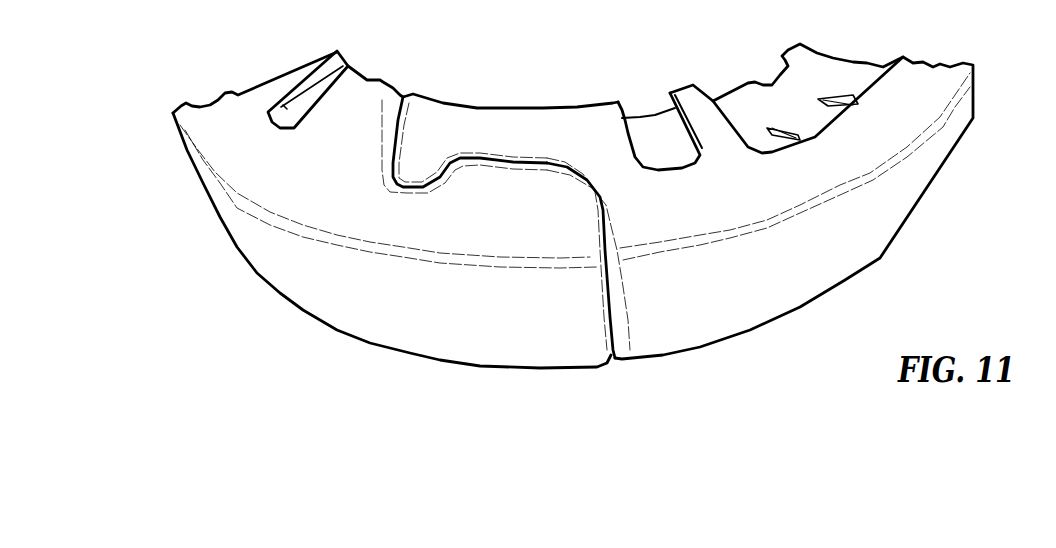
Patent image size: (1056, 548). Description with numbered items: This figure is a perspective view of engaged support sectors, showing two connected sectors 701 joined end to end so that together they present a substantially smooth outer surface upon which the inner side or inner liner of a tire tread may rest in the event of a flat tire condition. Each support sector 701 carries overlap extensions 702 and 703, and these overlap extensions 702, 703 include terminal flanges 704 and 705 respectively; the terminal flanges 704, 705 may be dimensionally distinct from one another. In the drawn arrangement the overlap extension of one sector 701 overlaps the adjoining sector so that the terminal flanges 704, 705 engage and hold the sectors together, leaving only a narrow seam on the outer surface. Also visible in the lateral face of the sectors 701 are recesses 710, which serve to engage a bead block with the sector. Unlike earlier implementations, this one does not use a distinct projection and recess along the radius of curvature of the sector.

The support sector 701 is at (250, 235).
The overlap extension 702 is at (443, 235).
The overlap extension 703 is at (513, 142).
The terminal flange 704 is at (533, 213).
The terminal flange 705 is at (428, 117).
The recesses 710 is at (313, 105).